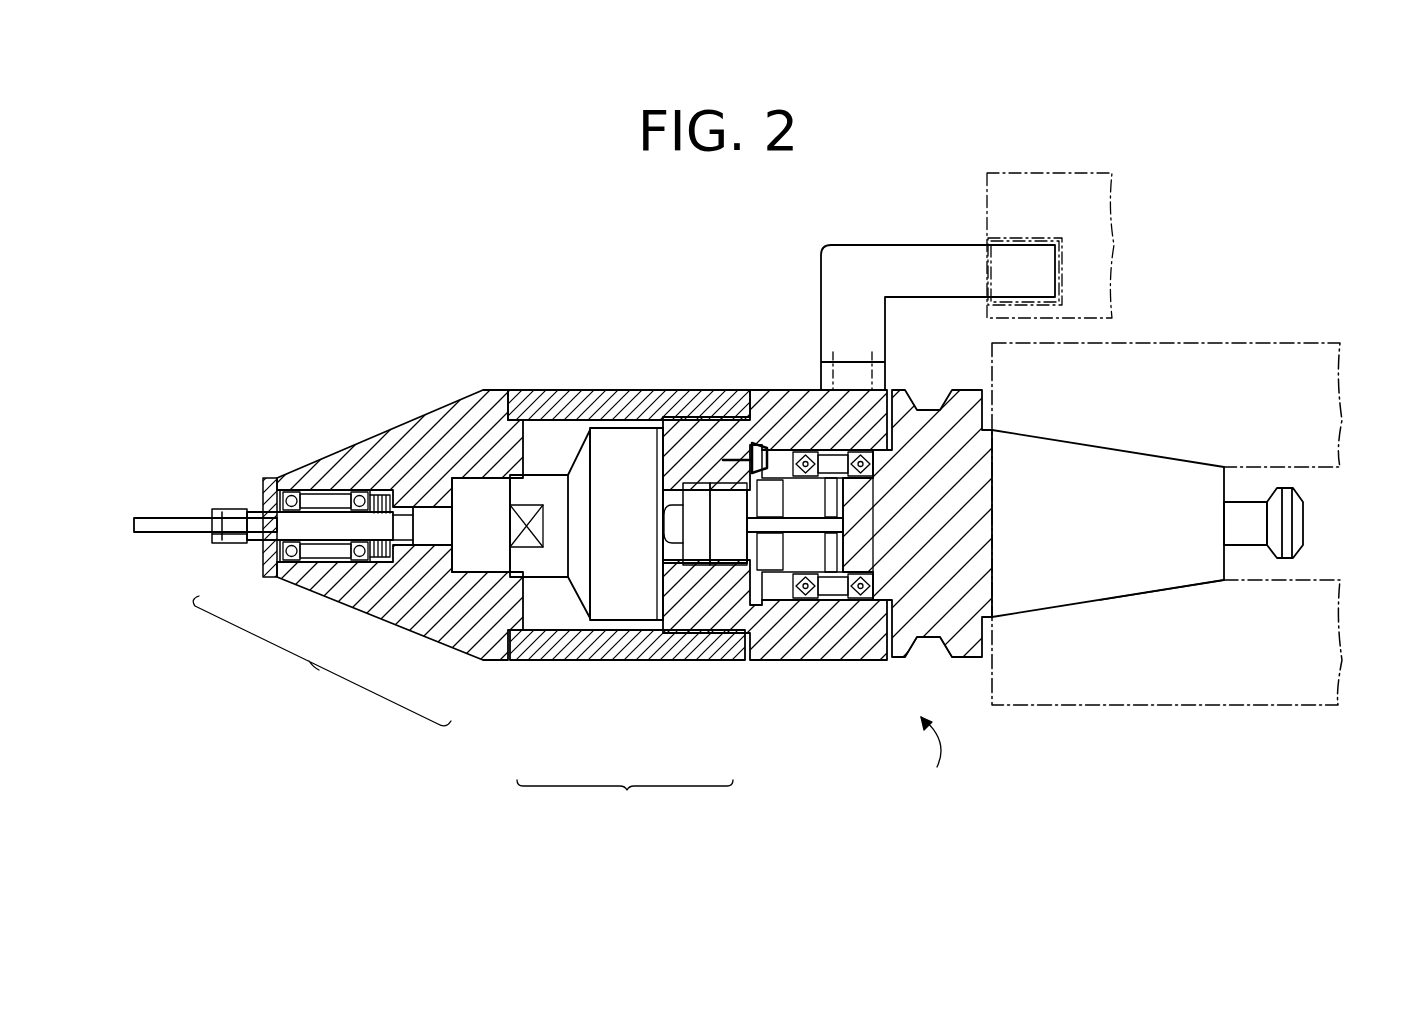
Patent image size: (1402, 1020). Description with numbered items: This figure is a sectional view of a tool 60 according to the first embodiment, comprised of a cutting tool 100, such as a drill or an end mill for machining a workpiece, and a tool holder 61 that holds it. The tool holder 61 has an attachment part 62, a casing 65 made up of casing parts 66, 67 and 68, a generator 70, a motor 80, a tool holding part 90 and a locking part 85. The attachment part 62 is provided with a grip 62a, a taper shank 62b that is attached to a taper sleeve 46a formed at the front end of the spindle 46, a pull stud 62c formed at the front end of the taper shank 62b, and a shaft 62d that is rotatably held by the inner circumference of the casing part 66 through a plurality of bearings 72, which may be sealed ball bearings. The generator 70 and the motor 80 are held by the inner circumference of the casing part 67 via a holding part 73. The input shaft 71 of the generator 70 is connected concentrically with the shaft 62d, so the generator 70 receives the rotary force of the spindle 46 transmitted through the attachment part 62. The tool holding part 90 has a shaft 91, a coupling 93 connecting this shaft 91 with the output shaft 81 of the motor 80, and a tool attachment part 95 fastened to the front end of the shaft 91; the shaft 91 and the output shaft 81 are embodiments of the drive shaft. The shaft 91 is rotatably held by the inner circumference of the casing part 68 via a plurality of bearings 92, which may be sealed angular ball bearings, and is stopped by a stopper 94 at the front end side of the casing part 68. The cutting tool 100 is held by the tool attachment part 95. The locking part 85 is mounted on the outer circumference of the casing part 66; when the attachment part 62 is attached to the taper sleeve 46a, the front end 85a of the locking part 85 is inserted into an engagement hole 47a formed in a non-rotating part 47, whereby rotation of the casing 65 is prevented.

The cutting tool 100 is at (160, 538).
The tool attachment part 95 is at (215, 545).
The stopper 94 is at (255, 570).
The bearings 92 is at (292, 556).
The shaft 91 is at (357, 542).
The coupling 93 is at (435, 545).
The tool holding part 90 is at (322, 661).
The output shaft 81 is at (478, 643).
The motor 80 is at (615, 620).
The casing part 68 is at (505, 665).
The casing part 67 is at (633, 660).
The casing part 66 is at (770, 660).
The casing 65 is at (625, 805).
The generator 70 is at (723, 558).
The input shaft 71 is at (747, 440).
The bearings 72 is at (855, 450).
The holding part 73 is at (737, 577).
The attachment part 62 is at (963, 650).
The grip 62a is at (917, 652).
The taper shank 62b is at (1071, 605).
The pull stud 62c is at (1290, 533).
The shaft 62d is at (833, 575).
The tool holder 61 is at (942, 758).
The tool 60 is at (833, 868).
The locking part 85 is at (915, 262).
The front end 85a is at (1035, 240).
The non-rotating part 47 is at (1112, 228).
The engagement hole 47a is at (1062, 292).
The spindle 46 is at (1216, 706).
The taper sleeve 46a is at (1150, 578).